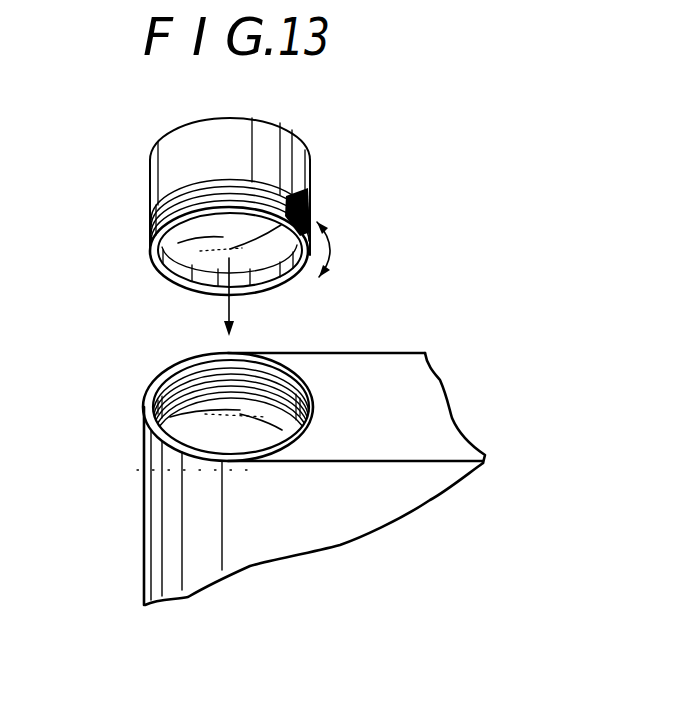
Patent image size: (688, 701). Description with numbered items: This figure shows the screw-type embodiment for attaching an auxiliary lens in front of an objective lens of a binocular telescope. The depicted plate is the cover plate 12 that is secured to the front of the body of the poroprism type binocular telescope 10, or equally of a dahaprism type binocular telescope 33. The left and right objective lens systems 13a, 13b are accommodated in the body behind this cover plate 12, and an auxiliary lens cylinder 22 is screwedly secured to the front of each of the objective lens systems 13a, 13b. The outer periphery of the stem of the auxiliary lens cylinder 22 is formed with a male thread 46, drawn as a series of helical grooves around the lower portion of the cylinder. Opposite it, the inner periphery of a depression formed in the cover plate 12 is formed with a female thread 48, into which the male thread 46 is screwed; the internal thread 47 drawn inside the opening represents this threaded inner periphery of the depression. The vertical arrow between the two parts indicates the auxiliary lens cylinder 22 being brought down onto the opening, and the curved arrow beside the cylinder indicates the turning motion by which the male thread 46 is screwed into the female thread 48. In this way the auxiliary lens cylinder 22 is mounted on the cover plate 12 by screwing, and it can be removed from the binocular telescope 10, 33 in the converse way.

The binocular telescope of poroprism type 10 is at (349, 443).
The dahaprism type binocular telescope 33 is at (349, 443).
The cover plate 12 is at (408, 381).
The left objective lens system 13a is at (305, 499).
The right objective lens system 13b is at (230, 428).
The auxiliary lens cylinder 22 is at (243, 227).
The male thread 46 is at (178, 200).
The internal thread of opening 47 is at (270, 395).
The female thread 48 is at (243, 368).